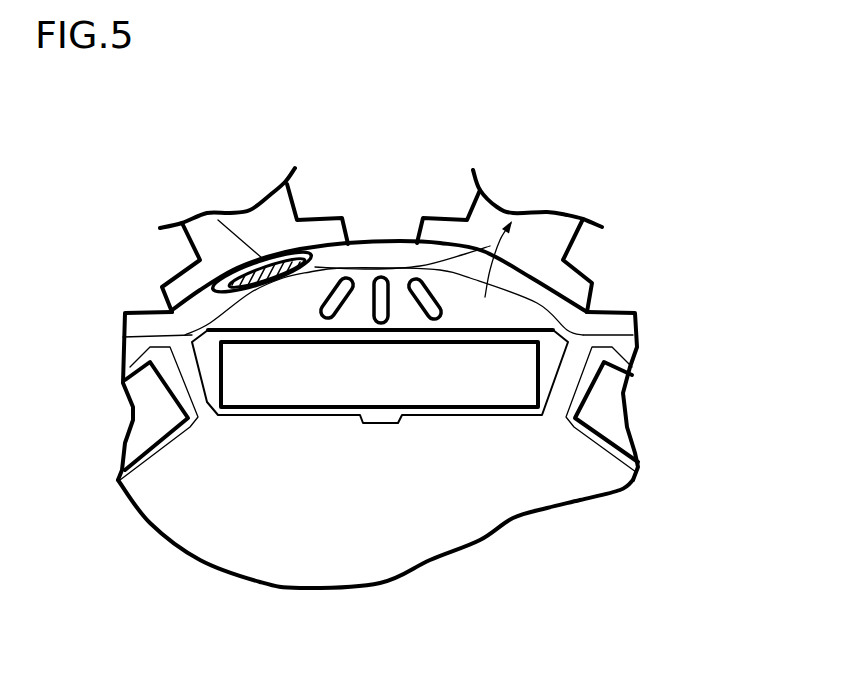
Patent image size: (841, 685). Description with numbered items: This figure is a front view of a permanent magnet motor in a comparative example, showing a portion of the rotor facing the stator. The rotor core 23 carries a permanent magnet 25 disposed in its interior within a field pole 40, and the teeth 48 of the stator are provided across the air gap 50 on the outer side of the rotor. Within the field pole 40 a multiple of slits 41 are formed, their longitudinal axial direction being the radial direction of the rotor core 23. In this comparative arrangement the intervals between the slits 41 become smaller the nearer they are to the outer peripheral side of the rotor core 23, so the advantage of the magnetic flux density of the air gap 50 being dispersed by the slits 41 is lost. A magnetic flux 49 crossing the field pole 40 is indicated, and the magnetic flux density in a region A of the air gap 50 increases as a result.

The rotor core 23 is at (368, 272).
The permanent magnet 25 is at (508, 390).
The field pole 40 is at (557, 212).
The slit 41 is at (380, 310).
The tooth 48 is at (577, 287).
The magnetic flux 49 is at (325, 272).
The air gap 50 is at (627, 328).
The region A is at (182, 280).